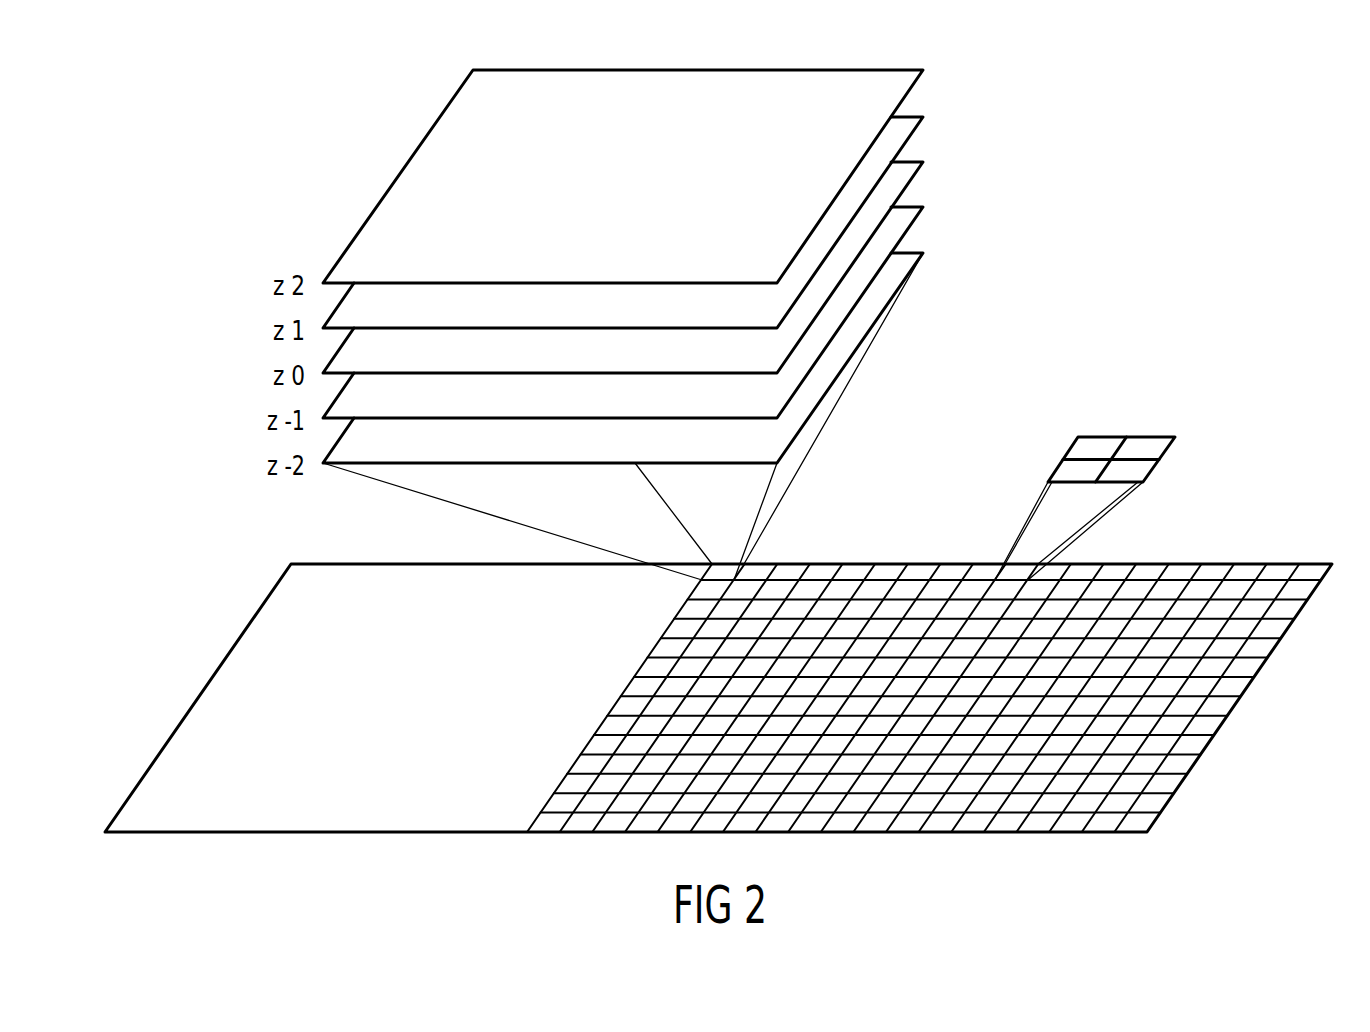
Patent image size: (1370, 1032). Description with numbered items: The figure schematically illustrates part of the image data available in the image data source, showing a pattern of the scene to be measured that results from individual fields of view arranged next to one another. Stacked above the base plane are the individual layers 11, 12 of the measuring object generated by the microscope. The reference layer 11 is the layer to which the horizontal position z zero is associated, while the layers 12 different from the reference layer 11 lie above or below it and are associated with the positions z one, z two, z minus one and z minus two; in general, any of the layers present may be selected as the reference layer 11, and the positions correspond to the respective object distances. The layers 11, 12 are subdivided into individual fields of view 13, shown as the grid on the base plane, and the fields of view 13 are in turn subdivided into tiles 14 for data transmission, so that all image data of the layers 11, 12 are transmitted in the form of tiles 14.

The reference layer 11 is at (923, 162).
The layers 12 is at (923, 117).
The fields of view 13 is at (884, 573).
The tiles 14 is at (1103, 437).